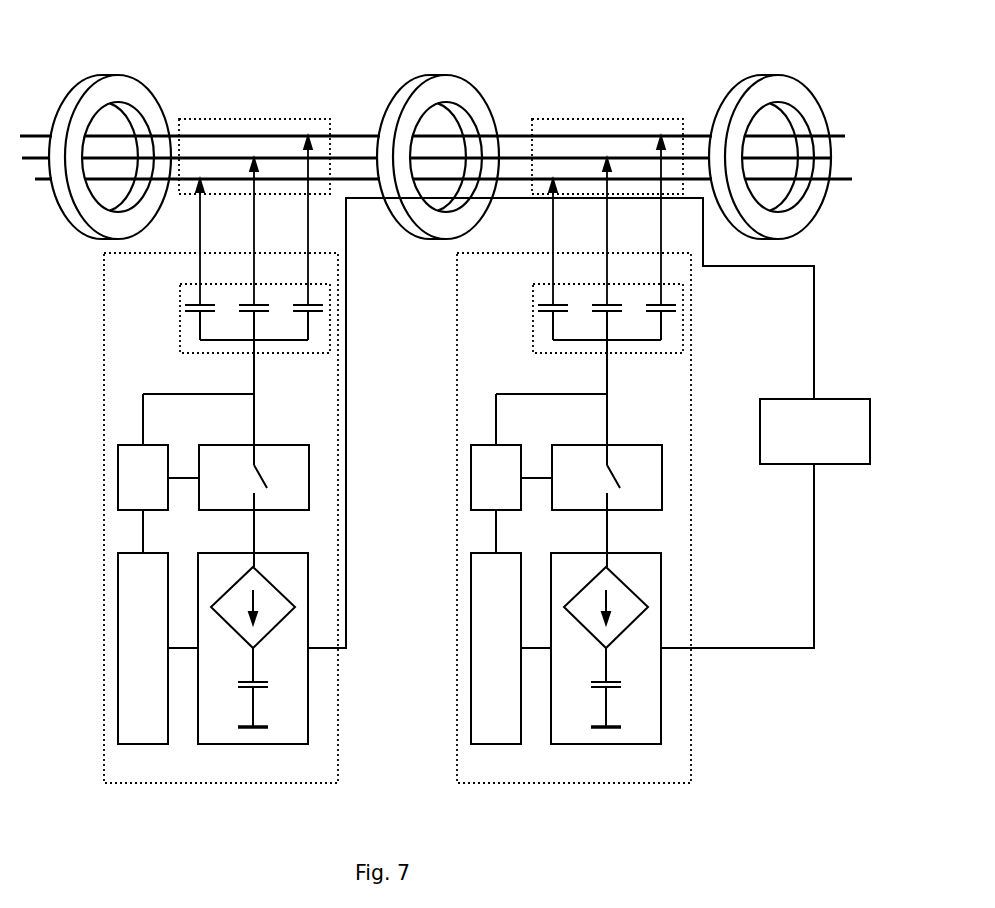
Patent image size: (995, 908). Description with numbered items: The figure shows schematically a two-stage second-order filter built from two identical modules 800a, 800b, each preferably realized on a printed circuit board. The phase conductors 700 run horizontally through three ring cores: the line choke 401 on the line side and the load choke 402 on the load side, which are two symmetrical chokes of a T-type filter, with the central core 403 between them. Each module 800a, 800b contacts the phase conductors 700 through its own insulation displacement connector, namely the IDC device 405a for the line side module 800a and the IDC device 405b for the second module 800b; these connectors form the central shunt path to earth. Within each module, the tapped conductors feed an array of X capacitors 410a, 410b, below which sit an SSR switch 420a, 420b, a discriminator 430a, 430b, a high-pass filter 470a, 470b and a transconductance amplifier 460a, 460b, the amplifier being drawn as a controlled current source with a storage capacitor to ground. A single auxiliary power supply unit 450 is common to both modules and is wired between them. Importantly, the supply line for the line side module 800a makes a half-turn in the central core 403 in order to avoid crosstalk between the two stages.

The phase conductors 700 is at (352, 133).
The line choke 401 is at (158, 97).
The load choke 402 is at (810, 107).
The central core 403 is at (477, 110).
The IDC device 405a is at (220, 129).
The IDC device 405b is at (570, 123).
The array of X capacitors 410a is at (187, 340).
The array of X capacitors 410b is at (675, 293).
The SSR switch 420a is at (273, 458).
The SSR switch 420b is at (658, 455).
The discriminator 430a is at (123, 477).
The discriminator 430b is at (478, 467).
The auxiliary power supply unit 450 is at (818, 415).
The transconductance amplifier 460a is at (303, 668).
The transconductance amplifier 460b is at (653, 665).
The high-pass filter 470a is at (120, 630).
The high-pass filter 470b is at (472, 577).
The line side module 800a is at (132, 772).
The module 800b is at (512, 777).